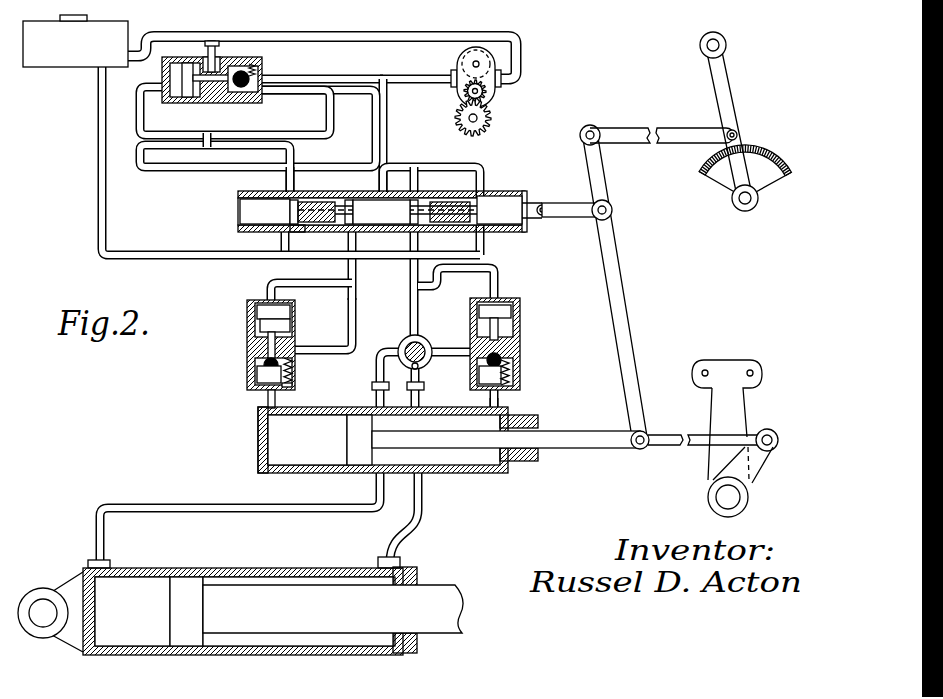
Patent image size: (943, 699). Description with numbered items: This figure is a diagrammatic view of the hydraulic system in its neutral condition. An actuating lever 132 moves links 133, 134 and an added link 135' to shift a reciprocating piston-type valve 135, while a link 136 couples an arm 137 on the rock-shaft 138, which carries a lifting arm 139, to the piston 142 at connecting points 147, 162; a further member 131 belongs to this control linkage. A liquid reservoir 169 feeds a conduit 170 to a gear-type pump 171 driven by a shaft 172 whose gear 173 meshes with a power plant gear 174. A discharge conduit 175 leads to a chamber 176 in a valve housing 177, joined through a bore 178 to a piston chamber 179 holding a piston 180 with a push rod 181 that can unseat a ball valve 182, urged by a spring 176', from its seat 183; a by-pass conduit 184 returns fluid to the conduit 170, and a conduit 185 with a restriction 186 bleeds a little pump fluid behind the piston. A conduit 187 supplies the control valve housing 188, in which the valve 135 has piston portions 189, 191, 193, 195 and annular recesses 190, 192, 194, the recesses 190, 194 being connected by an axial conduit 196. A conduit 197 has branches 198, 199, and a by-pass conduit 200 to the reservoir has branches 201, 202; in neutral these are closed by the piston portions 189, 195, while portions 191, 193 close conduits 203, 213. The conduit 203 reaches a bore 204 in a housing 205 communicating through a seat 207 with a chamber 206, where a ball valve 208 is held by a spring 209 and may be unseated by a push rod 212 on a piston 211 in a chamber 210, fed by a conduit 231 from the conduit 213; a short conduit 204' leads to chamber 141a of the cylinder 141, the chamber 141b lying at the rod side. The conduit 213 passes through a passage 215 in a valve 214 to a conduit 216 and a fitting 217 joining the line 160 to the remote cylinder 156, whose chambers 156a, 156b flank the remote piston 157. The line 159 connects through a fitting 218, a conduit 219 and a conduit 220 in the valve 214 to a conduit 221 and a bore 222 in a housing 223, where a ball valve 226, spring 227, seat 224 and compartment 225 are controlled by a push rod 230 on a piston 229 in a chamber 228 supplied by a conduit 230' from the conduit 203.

The toothed sector 131 is at (722, 190).
The actuating lever 132 is at (725, 72).
The link 133 is at (643, 128).
The link 134 is at (625, 288).
The valve 135 is at (549, 187).
The additional link 135' is at (572, 224).
The additional link 136 is at (698, 436).
The arm on the rock-shaft 137 is at (760, 480).
The rock-shaft 138 is at (716, 500).
The lifting arm 139 is at (740, 408).
The cylinder 141 is at (500, 474).
The chamber 141a is at (260, 453).
The chamber 141b is at (458, 456).
The piston 142 is at (590, 449).
The connecting point 147 is at (706, 370).
The remote cylinder 156 is at (192, 578).
The chamber 156a is at (136, 590).
The chamber 156b is at (322, 582).
The remote piston 157 is at (446, 592).
The fluid line 159 is at (425, 507).
The fluid line 160 is at (143, 508).
The connecting point 162 is at (752, 370).
The liquid reservoir 169 is at (57, 62).
The fluid conduit 170 is at (338, 33).
The fluid pressure pump 171 is at (496, 91).
The projecting shaft 172 is at (466, 100).
The gear 173 is at (465, 93).
The gear 174 is at (470, 134).
The discharge conduit 175 is at (360, 76).
The chamber 176 is at (322, 66).
The valve spring 176' is at (319, 126).
The valve housing 177 is at (245, 62).
The bore 178 is at (212, 100).
The piston chamber 179 is at (185, 99).
The piston 180 is at (180, 58).
The push rod 181 is at (208, 55).
The ball valve 182 is at (243, 91).
The seat 183 is at (256, 62).
The by-pass conduit 184 is at (216, 44).
The conduit 185 is at (133, 122).
The restriction 186 is at (215, 142).
The conduit 187 is at (379, 135).
The control valve housing 188 is at (245, 190).
The piston portion 189 is at (247, 210).
The annular recess portion 190 is at (300, 240).
The piston portion 191 is at (352, 197).
The annular recess portion 192 is at (381, 225).
The piston portion 193 is at (413, 186).
The annular recess portion 194 is at (465, 237).
The piston portion 195 is at (496, 205).
The axially extending conduit 196 is at (317, 226).
The conduit 197 is at (200, 168).
The branch 198 is at (290, 185).
The branch 199 is at (487, 165).
The by-pass conduit 200 is at (148, 258).
The branch conduit 201 is at (277, 240).
The branch conduit 202 is at (495, 233).
The conduit 203 is at (347, 303).
The bore 204 is at (276, 336).
The short conduit 204' is at (307, 440).
The valve housing 205 is at (264, 380).
The valve chamber 206 is at (294, 372).
The valve seat 207 is at (264, 366).
The ball valve 208 is at (268, 404).
The compression spring 209 is at (292, 386).
The piston chamber 210 is at (254, 328).
The piston 211 is at (258, 313).
The push rod 212 is at (290, 328).
The conduit 213 is at (412, 298).
The valve 214 is at (420, 337).
The passage 215 is at (403, 340).
The conduit 216 is at (378, 360).
The fitting 217 is at (373, 390).
The fitting 218 is at (423, 386).
The conduit 219 is at (418, 373).
The conduit 220 is at (424, 358).
The conduit 221 is at (447, 347).
The bore 222 is at (520, 340).
The valve housing 223 is at (502, 358).
The valve seat 224 is at (506, 370).
The valve compartment 225 is at (511, 378).
The ball valve 226 is at (500, 386).
The spring 227 is at (492, 403).
The piston chamber 228 is at (509, 318).
The piston 229 is at (499, 292).
The push rod 230 is at (529, 326).
The conduit 230' is at (446, 280).
The symmetrical conduit 231 is at (349, 275).